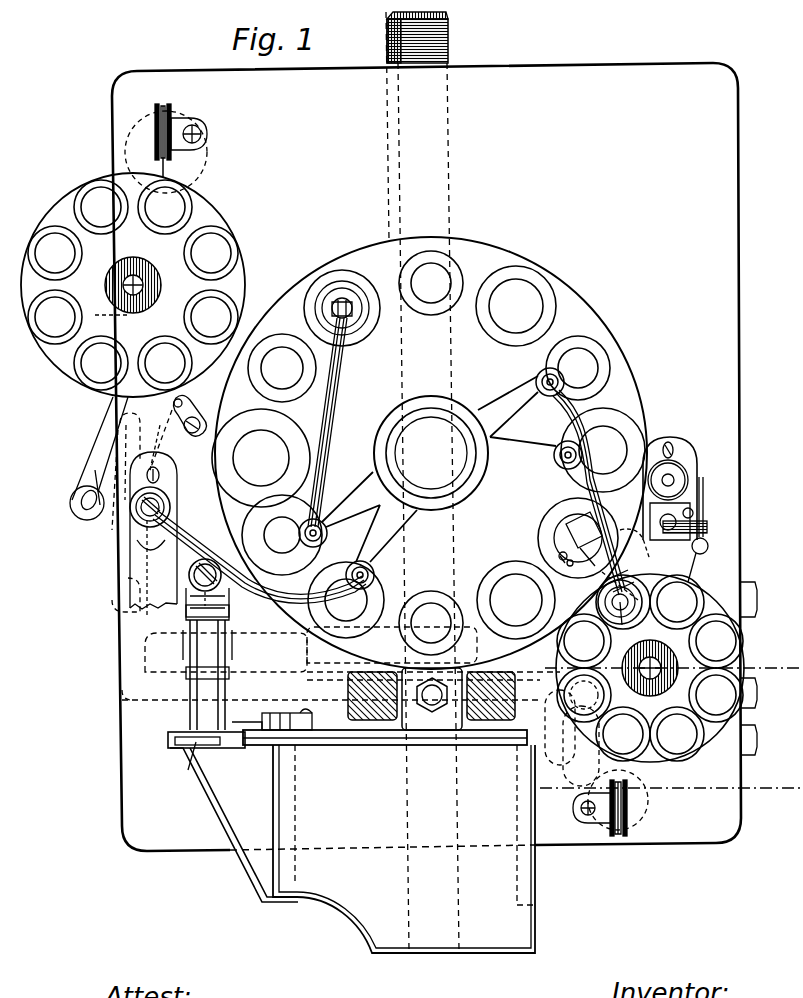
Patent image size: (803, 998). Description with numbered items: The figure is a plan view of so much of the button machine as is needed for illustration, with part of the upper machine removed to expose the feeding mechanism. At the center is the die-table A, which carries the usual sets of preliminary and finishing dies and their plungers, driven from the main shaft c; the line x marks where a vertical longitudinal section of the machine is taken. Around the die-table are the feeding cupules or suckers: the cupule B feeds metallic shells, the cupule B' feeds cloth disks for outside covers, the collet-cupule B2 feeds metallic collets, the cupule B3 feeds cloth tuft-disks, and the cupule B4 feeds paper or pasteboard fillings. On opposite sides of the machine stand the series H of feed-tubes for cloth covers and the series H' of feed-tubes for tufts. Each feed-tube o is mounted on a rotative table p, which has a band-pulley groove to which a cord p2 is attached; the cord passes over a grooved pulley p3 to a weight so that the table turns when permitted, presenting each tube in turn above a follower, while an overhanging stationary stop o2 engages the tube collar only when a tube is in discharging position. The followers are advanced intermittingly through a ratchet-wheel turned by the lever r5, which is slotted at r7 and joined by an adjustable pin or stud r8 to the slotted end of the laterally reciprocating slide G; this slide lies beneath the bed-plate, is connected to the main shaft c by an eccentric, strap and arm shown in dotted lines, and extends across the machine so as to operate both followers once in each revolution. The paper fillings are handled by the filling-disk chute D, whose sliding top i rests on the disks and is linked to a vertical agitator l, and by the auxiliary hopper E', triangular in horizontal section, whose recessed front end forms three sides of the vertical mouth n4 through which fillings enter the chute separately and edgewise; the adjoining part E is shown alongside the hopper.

The die-table A is at (429, 453).
The cupule B is at (163, 533).
The cupule B' is at (349, 398).
The collet-cupule B2 is at (565, 540).
The cupule B3 is at (630, 612).
The cupule B4 is at (206, 559).
The main shaft c is at (424, 37).
The section line x is at (415, 475).
The series of feed-tubes for cloth covers H is at (133, 285).
The series of feed-tubes for tufts H' is at (670, 705).
The feed-tubes o is at (133, 285).
The stationary stop o2 is at (200, 393).
The rotative table p is at (127, 291).
The cord p2 is at (166, 168).
The grooved pulley p3 is at (166, 139).
The lever r5 is at (118, 448).
The slot r7 is at (85, 486).
The pin or stud r8 is at (118, 430).
The slide G is at (118, 652).
The filling-disk chute D is at (341, 663).
The sliding top i is at (207, 667).
The vertical agitator l is at (170, 740).
The mouth n4 is at (188, 762).
The box E is at (404, 849).
The auxiliary hopper E' is at (234, 825).